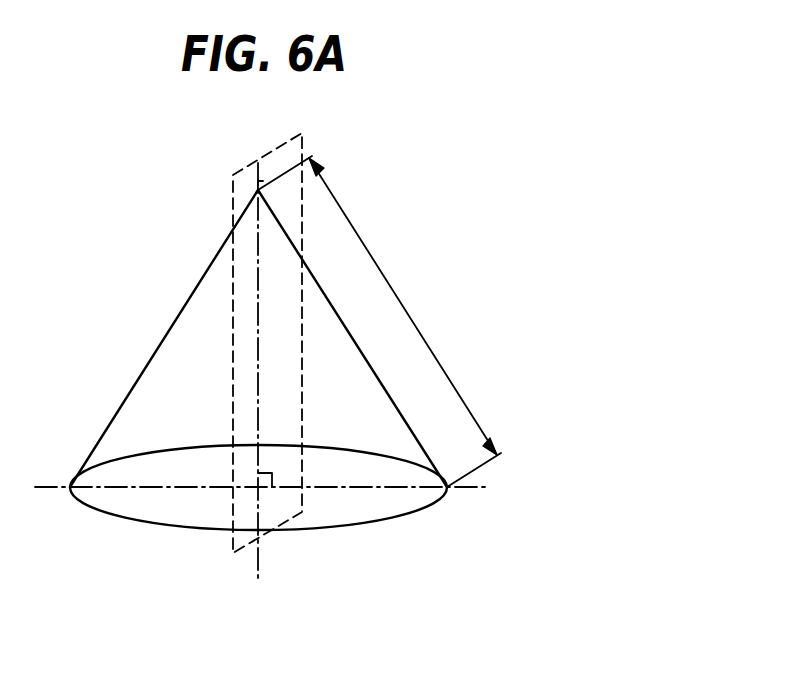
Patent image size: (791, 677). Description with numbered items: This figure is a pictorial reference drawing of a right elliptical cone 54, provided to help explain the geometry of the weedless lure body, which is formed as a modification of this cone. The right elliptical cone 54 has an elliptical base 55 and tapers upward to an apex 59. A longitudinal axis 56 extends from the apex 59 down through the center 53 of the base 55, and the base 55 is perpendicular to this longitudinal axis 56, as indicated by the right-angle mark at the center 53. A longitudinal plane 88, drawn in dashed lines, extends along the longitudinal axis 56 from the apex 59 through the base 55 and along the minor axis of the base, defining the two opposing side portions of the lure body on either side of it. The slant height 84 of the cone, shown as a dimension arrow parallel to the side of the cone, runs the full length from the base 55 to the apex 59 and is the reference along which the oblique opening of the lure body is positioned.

The longitudinal plane 88 is at (297, 133).
The apex 59 is at (257, 189).
The right elliptical cone 54 is at (227, 237).
The longitudinal axis 56 is at (263, 181).
The slant height 84 is at (421, 325).
The base 55 is at (93, 472).
The center of the base 53 is at (258, 488).